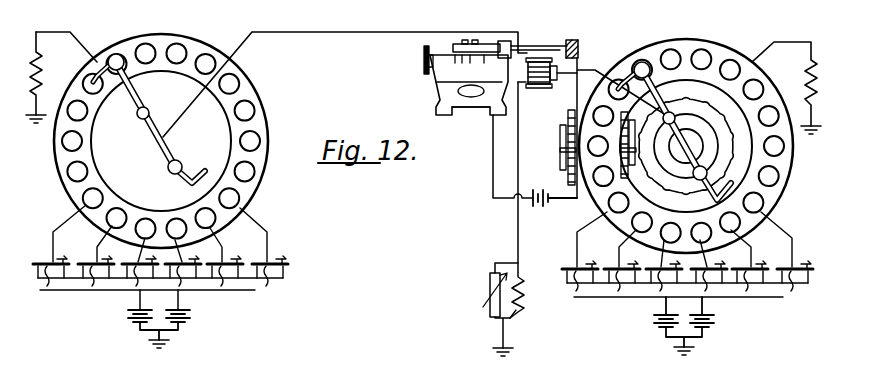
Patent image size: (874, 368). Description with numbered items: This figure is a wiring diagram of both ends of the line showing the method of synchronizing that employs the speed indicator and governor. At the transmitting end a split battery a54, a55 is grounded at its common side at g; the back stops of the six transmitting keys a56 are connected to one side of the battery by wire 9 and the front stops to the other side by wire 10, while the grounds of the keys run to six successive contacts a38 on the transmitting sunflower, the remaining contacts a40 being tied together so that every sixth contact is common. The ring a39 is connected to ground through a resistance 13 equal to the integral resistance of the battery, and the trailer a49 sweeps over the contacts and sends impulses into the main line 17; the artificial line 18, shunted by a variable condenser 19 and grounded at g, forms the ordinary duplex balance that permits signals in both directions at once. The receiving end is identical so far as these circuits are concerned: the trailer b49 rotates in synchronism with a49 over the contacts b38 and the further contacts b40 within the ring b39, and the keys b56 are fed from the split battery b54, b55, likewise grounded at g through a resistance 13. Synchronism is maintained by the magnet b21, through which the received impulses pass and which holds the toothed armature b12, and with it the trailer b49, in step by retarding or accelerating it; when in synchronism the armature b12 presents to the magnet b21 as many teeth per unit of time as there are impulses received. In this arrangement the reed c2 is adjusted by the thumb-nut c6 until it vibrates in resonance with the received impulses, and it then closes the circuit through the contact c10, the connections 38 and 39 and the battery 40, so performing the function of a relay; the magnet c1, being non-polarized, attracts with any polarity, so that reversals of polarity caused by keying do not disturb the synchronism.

The main line 17 is at (343, 32).
The resistance 13 is at (43, 68).
The ground g is at (423, 183).
The ring a39 is at (262, 92).
The contacts a38 is at (258, 128).
The contact segments of sending selector a40 is at (262, 139).
The trailer a49 is at (162, 148).
The transmitting keys a56 is at (288, 265).
The split battery a54 is at (127, 318).
The split battery a55 is at (190, 318).
The wire 10 is at (137, 300).
The wire 9 is at (180, 300).
The thumb-nut c6 is at (424, 60).
The magnet c1 is at (540, 88).
The reed c2 is at (543, 46).
The contact c10 is at (575, 40).
The circuit connection 39 is at (493, 177).
The battery 40 is at (545, 181).
The circuit connection 38 is at (580, 66).
The magnet b21 is at (566, 190).
The artificial line 18 is at (521, 284).
The variable condenser 19 is at (490, 290).
The contact ring of receiving selector b39 is at (699, 40).
The contacts b38 is at (708, 52).
The contact segments of receiving selector b40 is at (714, 58).
The armature b12 is at (681, 107).
The trailer b49 is at (623, 74).
The keys b56 is at (566, 273).
The battery b54 is at (654, 322).
The battery b55 is at (714, 322).